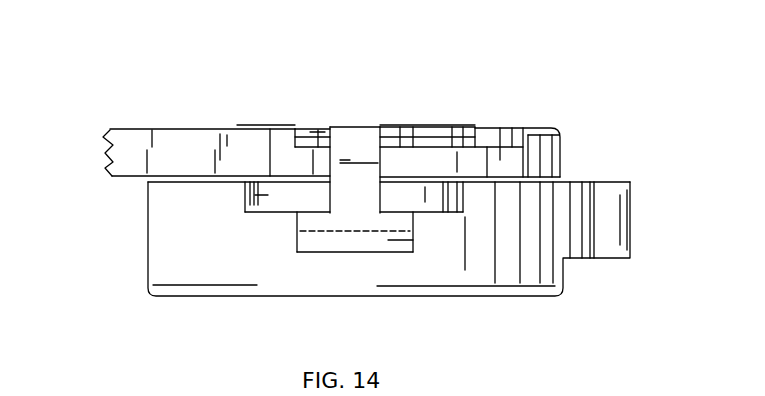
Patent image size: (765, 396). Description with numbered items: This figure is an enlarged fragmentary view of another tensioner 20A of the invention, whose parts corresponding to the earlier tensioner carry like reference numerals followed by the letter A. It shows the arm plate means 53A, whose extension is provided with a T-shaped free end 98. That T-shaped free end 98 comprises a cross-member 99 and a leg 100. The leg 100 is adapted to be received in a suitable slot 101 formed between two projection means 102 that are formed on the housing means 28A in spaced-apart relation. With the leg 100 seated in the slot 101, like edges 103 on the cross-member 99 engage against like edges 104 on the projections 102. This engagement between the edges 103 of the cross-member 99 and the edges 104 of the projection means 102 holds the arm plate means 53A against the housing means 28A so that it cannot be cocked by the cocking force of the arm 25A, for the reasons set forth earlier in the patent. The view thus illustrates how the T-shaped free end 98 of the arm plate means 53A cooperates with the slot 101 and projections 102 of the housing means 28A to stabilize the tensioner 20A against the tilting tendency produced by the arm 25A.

The tensioner 20A is at (533, 88).
The arm 25A is at (178, 143).
The housing means 28A is at (163, 251).
The arm plate means 53A is at (307, 125).
The T-shaped free end 98 is at (342, 214).
The cross-member 99 is at (333, 250).
The leg 100 is at (358, 185).
The slot 101 is at (297, 213).
The projection means 102 is at (322, 199).
The edges 103 is at (390, 212).
The edges 104 is at (407, 214).